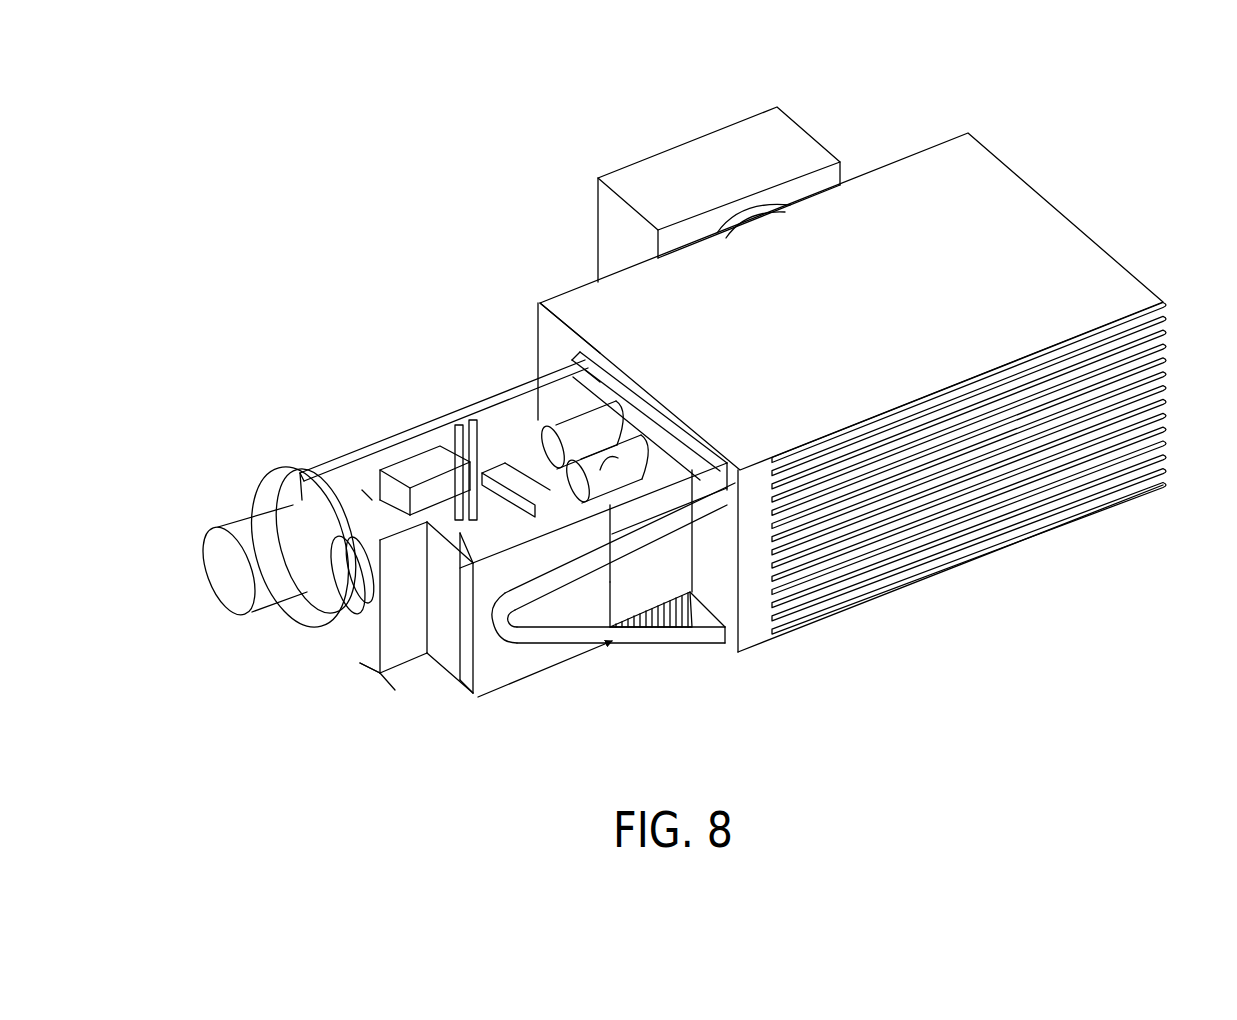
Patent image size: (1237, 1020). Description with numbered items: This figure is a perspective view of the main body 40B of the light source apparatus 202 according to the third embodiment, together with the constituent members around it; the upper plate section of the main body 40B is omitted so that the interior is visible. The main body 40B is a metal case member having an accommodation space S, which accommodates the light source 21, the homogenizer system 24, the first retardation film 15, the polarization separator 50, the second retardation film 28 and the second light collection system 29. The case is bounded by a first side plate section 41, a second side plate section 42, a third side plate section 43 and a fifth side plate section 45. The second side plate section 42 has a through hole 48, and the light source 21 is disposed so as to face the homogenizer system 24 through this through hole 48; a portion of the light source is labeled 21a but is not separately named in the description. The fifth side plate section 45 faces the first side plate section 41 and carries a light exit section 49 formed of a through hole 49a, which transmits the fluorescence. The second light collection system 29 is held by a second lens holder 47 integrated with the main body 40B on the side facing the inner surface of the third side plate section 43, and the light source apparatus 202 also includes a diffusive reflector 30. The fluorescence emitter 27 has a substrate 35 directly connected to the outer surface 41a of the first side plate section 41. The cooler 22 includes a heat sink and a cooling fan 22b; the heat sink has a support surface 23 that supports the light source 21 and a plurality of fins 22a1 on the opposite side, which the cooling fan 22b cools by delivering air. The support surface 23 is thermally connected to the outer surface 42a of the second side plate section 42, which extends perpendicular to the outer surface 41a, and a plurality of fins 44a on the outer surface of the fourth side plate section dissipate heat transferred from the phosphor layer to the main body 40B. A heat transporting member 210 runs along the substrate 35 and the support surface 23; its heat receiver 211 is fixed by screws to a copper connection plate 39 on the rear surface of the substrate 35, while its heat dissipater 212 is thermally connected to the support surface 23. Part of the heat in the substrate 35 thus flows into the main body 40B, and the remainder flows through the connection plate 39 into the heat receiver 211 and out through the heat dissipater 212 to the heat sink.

The light source apparatus 202 is at (1040, 113).
The cooler 22 is at (768, 142).
The cooling fan 22b is at (938, 50).
The fins 22a1 is at (900, 587).
The light source 21 is at (513, 435).
The frame portion 21a is at (665, 463).
The heat dissipater 212 is at (602, 395).
The through hole 48 is at (587, 406).
The accommodation space S is at (543, 426).
The homogenizer system 24 is at (500, 468).
The polarization separator 50 is at (456, 435).
The first retardation film 15 is at (476, 422).
The fifth side plate section 45 is at (404, 468).
The light exit section 49 is at (375, 413).
The through hole 49a is at (368, 498).
The third side plate section 43 is at (322, 475).
The second lens holder 47 is at (334, 498).
The second light collection system 29 is at (376, 493).
The diffusive reflector 30 is at (216, 513).
The substrate 35 is at (428, 648).
The fluorescence emitter 27 is at (453, 690).
The connection plate 39 is at (492, 655).
The second side plate section 42 is at (606, 498).
The outer surface 42a is at (606, 498).
The heat receiver 211 is at (540, 636).
The heat transporting member 210 is at (598, 648).
The first side plate section 41 is at (665, 622).
The outer surface 41a is at (640, 630).
The support surface 23 is at (670, 661).
The fins 44a is at (687, 630).
The second retardation film 28 is at (355, 666).
The main body 40B is at (358, 676).